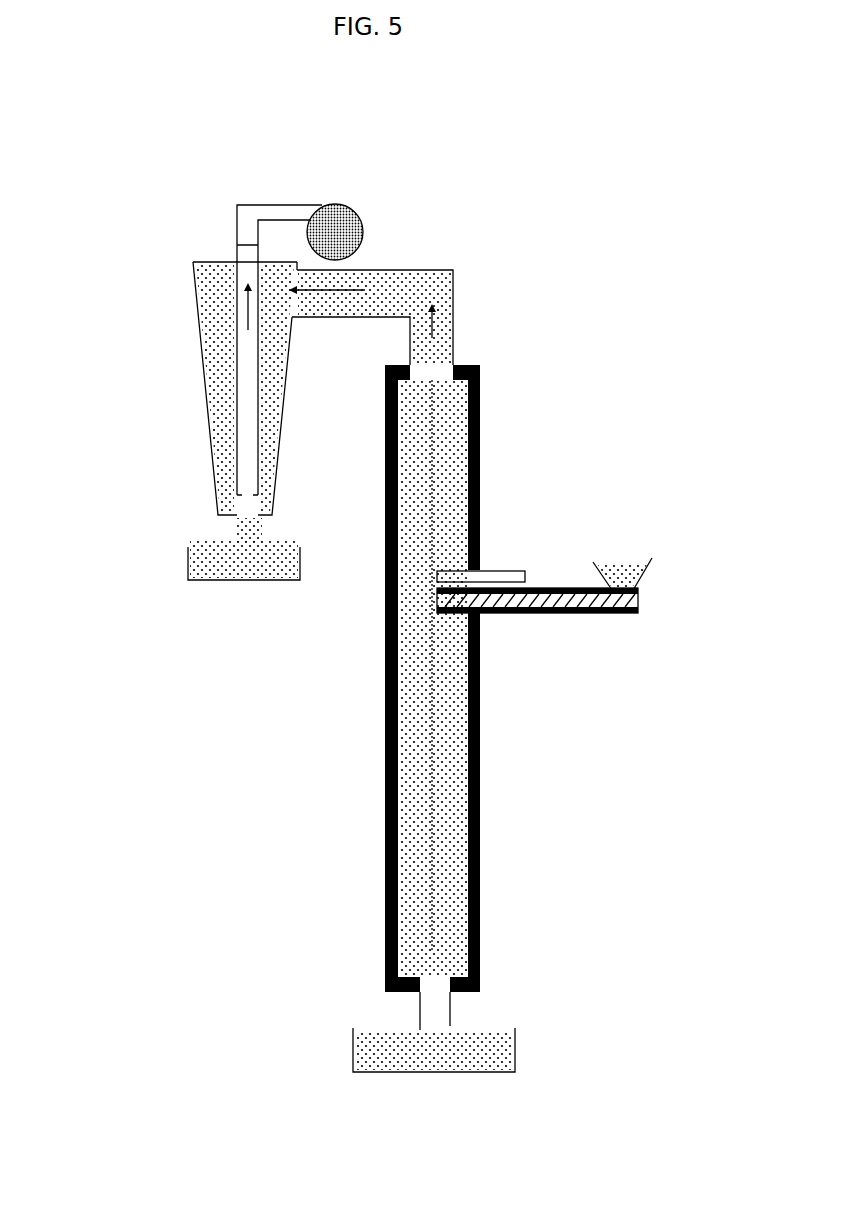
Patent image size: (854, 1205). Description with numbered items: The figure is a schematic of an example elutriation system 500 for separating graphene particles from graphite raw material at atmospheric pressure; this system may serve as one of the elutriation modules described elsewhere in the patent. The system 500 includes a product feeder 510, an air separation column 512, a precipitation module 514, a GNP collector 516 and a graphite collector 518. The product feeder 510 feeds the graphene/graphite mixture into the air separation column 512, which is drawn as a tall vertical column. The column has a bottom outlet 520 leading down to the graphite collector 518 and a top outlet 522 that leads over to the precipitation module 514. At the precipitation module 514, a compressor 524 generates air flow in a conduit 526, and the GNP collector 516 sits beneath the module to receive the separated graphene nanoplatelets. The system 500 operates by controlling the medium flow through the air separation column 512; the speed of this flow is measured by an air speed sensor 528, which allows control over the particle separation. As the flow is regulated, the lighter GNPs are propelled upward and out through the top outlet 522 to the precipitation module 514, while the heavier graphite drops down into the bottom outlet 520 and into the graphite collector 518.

The elutriation system 500 is at (299, 141).
The product feeder 510 is at (637, 603).
The air separation column 512 is at (478, 478).
The precipitation module 514 is at (203, 345).
The GNP collector 516 is at (188, 558).
The graphite collector 518 is at (518, 1045).
The bottom outlet 520 is at (443, 985).
The top outlet 522 is at (458, 322).
The compressor 524 is at (343, 218).
The conduit 526 is at (245, 270).
The air speed sensor 528 is at (515, 572).